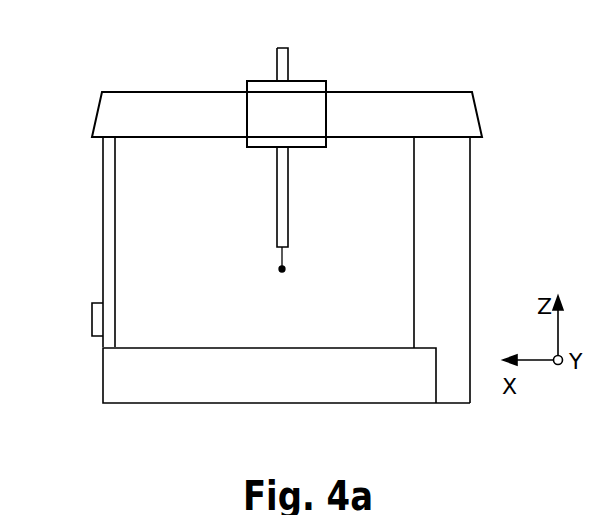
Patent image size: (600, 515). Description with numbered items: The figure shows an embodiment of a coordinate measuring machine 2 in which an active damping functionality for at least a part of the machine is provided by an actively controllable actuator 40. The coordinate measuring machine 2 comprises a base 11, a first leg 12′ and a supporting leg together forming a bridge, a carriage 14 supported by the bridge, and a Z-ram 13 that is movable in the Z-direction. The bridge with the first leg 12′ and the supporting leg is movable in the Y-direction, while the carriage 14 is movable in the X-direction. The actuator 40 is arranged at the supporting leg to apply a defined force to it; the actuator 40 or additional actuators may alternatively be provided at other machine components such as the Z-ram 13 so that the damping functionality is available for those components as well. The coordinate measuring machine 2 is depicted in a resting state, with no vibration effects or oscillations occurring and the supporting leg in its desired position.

The coordinate measuring machine 2 is at (460, 35).
The carriage 14 is at (308, 90).
The Z-ram 13 is at (283, 207).
The first leg 12′ is at (458, 210).
The actuator 40 is at (98, 323).
The base 11 is at (113, 378).